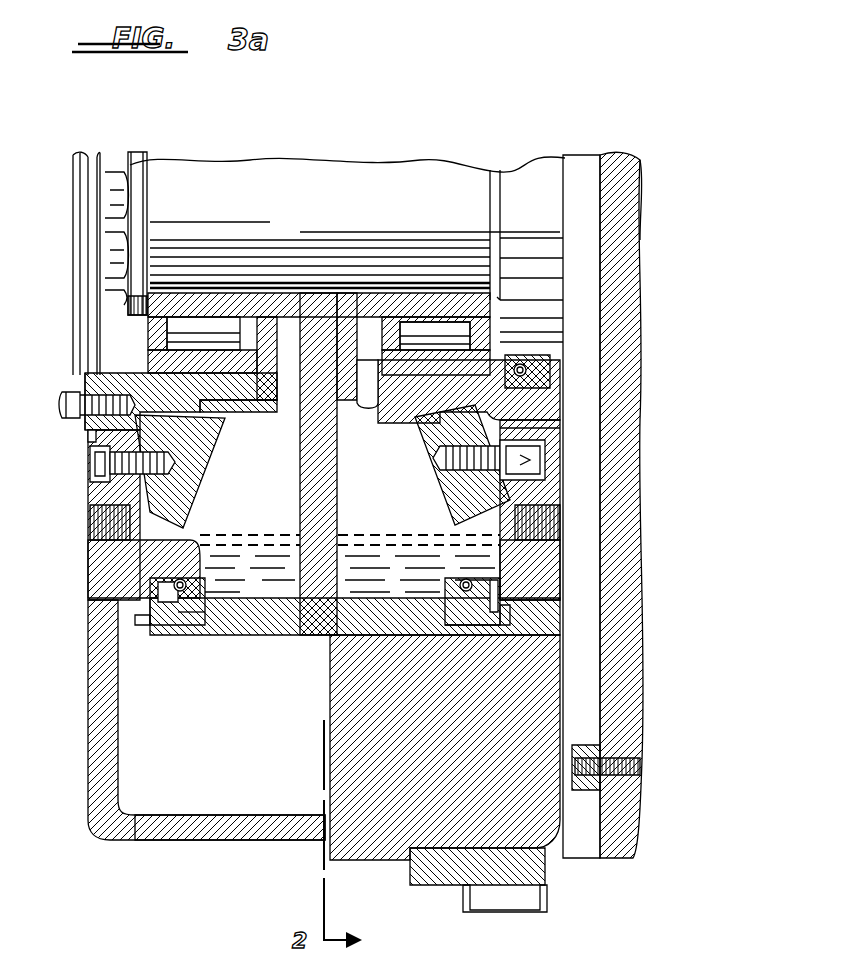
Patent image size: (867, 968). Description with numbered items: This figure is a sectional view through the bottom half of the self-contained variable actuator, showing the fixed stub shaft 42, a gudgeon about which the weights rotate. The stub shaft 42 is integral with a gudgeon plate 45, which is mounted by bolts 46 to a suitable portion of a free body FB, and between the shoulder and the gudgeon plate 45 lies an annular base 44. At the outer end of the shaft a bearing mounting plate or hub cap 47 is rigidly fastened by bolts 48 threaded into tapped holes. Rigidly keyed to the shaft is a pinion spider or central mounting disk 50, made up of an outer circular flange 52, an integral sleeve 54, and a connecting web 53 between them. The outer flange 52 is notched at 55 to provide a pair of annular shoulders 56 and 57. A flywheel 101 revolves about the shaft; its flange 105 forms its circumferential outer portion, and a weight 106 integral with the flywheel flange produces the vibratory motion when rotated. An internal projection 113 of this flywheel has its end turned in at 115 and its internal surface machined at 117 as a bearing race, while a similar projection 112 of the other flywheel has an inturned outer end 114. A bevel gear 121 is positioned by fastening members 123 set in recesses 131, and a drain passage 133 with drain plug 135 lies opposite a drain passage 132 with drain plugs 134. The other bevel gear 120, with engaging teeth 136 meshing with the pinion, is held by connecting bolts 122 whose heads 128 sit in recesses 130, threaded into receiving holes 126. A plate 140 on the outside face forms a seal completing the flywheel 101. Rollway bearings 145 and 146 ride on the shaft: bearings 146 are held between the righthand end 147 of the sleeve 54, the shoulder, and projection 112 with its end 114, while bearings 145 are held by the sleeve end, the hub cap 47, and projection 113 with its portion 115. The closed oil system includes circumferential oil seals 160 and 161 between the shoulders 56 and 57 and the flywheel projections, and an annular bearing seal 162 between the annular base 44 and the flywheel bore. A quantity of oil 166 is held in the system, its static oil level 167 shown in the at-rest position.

The stub shaft 42 is at (245, 193).
The annular base 44 is at (555, 216).
The gudgeon plate 45 is at (590, 243).
The free body FB is at (641, 285).
The plate 140 is at (85, 213).
The bolts 48 is at (108, 266).
The bearing mounting plate or hub cap 47 is at (135, 298).
The sleeve 54 is at (285, 298).
The righthand end of sleeve 147 is at (357, 298).
The rollway bearings 146 is at (435, 298).
The rollway bearings 145 is at (150, 368).
The connecting web 53 is at (335, 420).
The pinion spider or central mounting disk 50 is at (340, 472).
The internal projection 113 is at (120, 385).
The machined internal surface 117 is at (115, 375).
The inturned end 115 is at (277, 382).
The bevel gear 121 is at (100, 505).
The recesses 131 is at (90, 437).
The fastening members 123 is at (100, 478).
The drain plug 135 is at (97, 535).
The drain passage 133 is at (100, 560).
The projection 112 is at (413, 412).
The inturned outer end 114 is at (362, 376).
The annular circumferential bearing seal 162 is at (550, 372).
The engaging teeth 136 is at (428, 448).
The bevel gear 120 is at (470, 487).
The receiving holes 126 is at (488, 452).
The heads of bolts 128 is at (540, 462).
The recesses 130 is at (545, 442).
The connecting bolts 122 is at (555, 432).
The drain plugs 134 is at (520, 535).
The drain passages 132 is at (512, 540).
The oil 166 is at (265, 548).
The static oil level 167 is at (385, 548).
The outer circular flange 52 is at (264, 636).
The circumferential oil seal 161 is at (160, 580).
The circumferential oil seal 160 is at (490, 626).
The notches 55 is at (143, 618).
The annular shoulder 57 is at (185, 614).
The annular shoulder 56 is at (455, 628).
The flywheel 101 is at (100, 738).
The flange 105 is at (168, 838).
The weight 106 is at (348, 740).
The bolts 46 is at (640, 768).